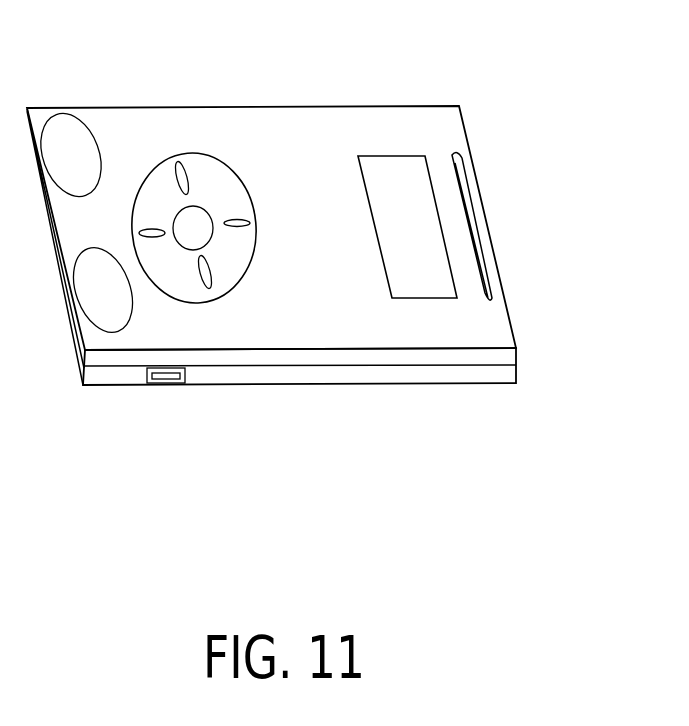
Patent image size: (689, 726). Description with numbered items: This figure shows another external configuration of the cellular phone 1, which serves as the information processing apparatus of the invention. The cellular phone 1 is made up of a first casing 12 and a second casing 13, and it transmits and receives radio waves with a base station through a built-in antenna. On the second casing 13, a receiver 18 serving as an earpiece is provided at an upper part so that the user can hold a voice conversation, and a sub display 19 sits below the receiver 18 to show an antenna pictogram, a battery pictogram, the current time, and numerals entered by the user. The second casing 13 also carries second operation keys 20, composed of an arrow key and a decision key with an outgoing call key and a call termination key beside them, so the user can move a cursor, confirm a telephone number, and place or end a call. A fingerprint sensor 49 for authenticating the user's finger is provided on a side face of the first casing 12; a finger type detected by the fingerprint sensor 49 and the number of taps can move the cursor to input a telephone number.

The cellular phone 1 is at (383, 438).
The first casing 12 is at (517, 373).
The second casing 13 is at (517, 356).
The receiver 18 is at (453, 152).
The sub display 19 is at (393, 153).
The second operation keys 20 is at (230, 98).
The fingerprint sensor 49 is at (160, 387).